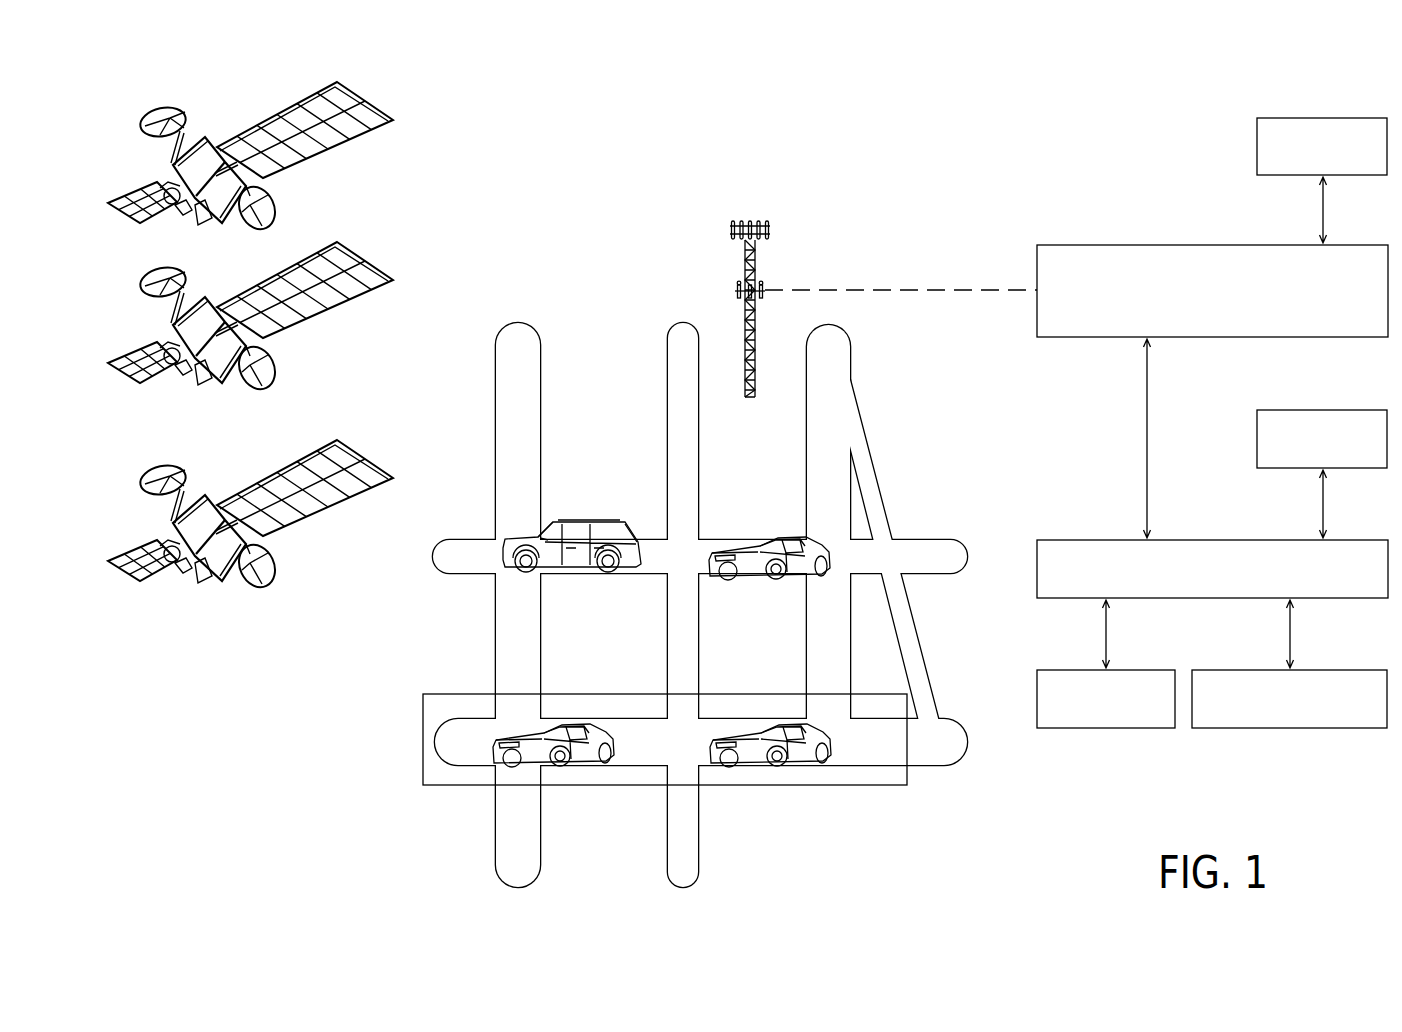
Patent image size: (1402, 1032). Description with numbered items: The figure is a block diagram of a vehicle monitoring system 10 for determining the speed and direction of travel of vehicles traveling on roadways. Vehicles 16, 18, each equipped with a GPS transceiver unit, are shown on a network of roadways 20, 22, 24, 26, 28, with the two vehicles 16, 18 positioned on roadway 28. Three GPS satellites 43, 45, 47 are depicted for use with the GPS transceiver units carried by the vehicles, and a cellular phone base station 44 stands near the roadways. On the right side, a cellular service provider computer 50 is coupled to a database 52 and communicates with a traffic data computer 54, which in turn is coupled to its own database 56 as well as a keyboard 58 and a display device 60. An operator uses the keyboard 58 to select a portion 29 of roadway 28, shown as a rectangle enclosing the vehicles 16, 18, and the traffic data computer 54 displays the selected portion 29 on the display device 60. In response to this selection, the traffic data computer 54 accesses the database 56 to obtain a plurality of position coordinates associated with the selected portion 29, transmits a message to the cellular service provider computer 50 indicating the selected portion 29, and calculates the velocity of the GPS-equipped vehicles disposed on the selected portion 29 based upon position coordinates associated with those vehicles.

The vehicle monitoring system 10 is at (771, 164).
The vehicle 16 is at (557, 719).
The vehicle 18 is at (757, 720).
The roadway 20 is at (541, 352).
The roadway 22 is at (698, 458).
The roadway 24 is at (850, 368).
The roadway 26 is at (923, 540).
The roadway 28 is at (923, 767).
The portion of a roadway 29 is at (713, 694).
The GPS satellite 43 is at (373, 103).
The cellular phone base station 44 is at (755, 263).
The GPS satellite 45 is at (373, 263).
The GPS satellite 47 is at (373, 462).
The cellular service provider computer 50 is at (1127, 245).
The database 52 is at (1332, 118).
The traffic data computer 54 is at (1200, 540).
The database 56 is at (1345, 410).
The keyboard 58 is at (1133, 670).
The display device 60 is at (1340, 670).